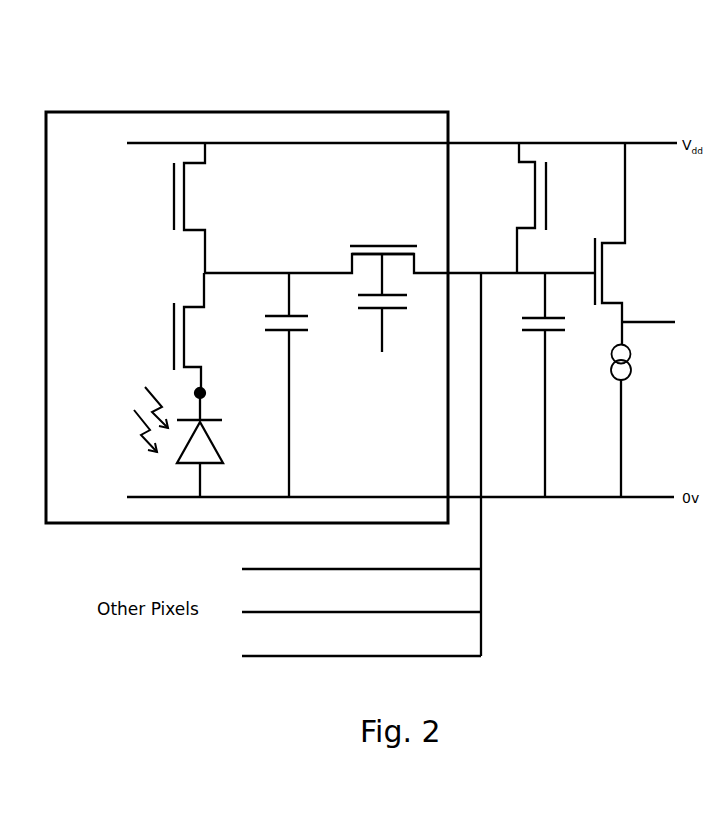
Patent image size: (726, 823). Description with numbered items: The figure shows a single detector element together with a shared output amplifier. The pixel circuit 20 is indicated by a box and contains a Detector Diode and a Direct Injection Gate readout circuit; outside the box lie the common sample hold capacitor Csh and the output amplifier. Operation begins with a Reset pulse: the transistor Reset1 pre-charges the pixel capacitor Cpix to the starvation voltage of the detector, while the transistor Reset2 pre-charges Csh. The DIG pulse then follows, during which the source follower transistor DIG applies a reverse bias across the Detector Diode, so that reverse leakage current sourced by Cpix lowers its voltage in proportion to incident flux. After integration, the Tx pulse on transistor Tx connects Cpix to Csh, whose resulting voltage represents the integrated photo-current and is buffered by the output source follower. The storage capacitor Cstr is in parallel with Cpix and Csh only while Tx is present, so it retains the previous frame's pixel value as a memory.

The pixel circuit 20 is at (99, 107).
The Reset pulse transistor Reset1 is at (174, 199).
The Tx transistor Tx is at (382, 246).
The pixel capacitor Cpix is at (316, 385).
The storage capacitor Cstr is at (400, 303).
The Direct Injection Gate transistor DIG is at (174, 337).
The sample hold reset transistor Reset2 is at (590, 196).
The sample hold capacitor Csh is at (526, 385).